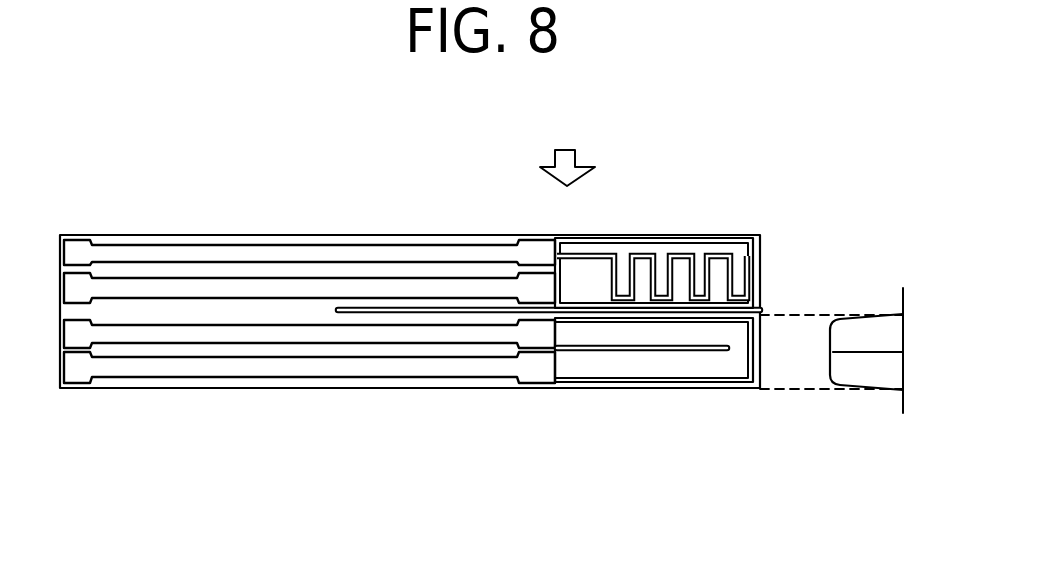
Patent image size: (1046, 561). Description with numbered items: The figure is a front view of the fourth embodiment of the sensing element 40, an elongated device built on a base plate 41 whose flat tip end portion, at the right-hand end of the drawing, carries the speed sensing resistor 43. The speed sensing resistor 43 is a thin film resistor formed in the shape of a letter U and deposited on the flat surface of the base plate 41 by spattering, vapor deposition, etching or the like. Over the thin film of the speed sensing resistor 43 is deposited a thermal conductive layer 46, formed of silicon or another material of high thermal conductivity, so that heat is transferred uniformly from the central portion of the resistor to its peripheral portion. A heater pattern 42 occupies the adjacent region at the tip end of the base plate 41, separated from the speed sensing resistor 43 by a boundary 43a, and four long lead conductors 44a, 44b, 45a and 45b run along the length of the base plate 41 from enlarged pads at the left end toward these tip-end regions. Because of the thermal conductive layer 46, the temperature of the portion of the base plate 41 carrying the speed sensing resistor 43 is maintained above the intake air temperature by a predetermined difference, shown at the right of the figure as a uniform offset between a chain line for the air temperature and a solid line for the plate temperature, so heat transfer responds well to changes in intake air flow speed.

The sensing element 40 is at (392, 236).
The base plate 41 is at (428, 390).
The heater resistor 42 is at (757, 243).
The speed sensing resistor 43 is at (668, 392).
The boundary / separating line 43a is at (760, 312).
The lead conductor 44a is at (193, 287).
The lead conductor 44b is at (263, 245).
The lead conductor 45a is at (212, 363).
The lead conductor 45b is at (280, 335).
The thermal conductive layer 46 is at (710, 368).